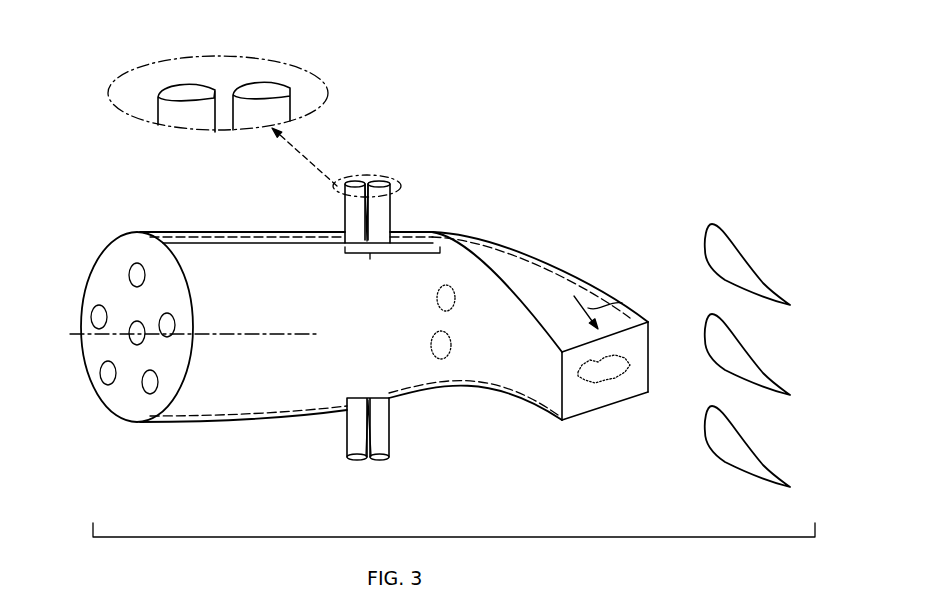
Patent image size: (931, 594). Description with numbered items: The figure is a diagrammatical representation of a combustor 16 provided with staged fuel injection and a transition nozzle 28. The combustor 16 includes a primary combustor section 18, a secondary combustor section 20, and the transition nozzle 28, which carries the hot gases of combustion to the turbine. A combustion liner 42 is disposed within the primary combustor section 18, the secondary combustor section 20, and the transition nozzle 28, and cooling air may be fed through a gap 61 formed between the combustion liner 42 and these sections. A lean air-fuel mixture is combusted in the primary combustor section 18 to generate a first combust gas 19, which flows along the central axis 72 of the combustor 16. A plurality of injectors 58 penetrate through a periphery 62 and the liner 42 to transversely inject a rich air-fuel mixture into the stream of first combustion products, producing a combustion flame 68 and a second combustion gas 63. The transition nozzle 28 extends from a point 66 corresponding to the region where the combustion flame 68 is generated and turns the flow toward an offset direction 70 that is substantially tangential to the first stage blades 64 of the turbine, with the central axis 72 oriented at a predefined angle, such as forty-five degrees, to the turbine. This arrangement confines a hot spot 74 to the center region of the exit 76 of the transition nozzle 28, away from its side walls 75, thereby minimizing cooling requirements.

The combustor 16 is at (557, 113).
The primary combustor section 18 is at (257, 247).
The first combust gas 19 is at (272, 399).
The secondary combustor section 20 is at (392, 353).
The transition nozzle 28 is at (608, 276).
The combustion liner 42 is at (428, 237).
The injectors 58 is at (250, 90).
The gap 61 is at (224, 232).
The periphery 62 is at (404, 232).
The second combustion gas 63 is at (425, 373).
The first stage blades 64 is at (738, 352).
The point 66 is at (433, 240).
The combustion flame 68 is at (453, 335).
The offset direction 70 is at (640, 312).
The central axis 72 is at (248, 334).
The hot spot 74 is at (612, 370).
The side walls 75 is at (562, 392).
The exit 76 is at (573, 405).